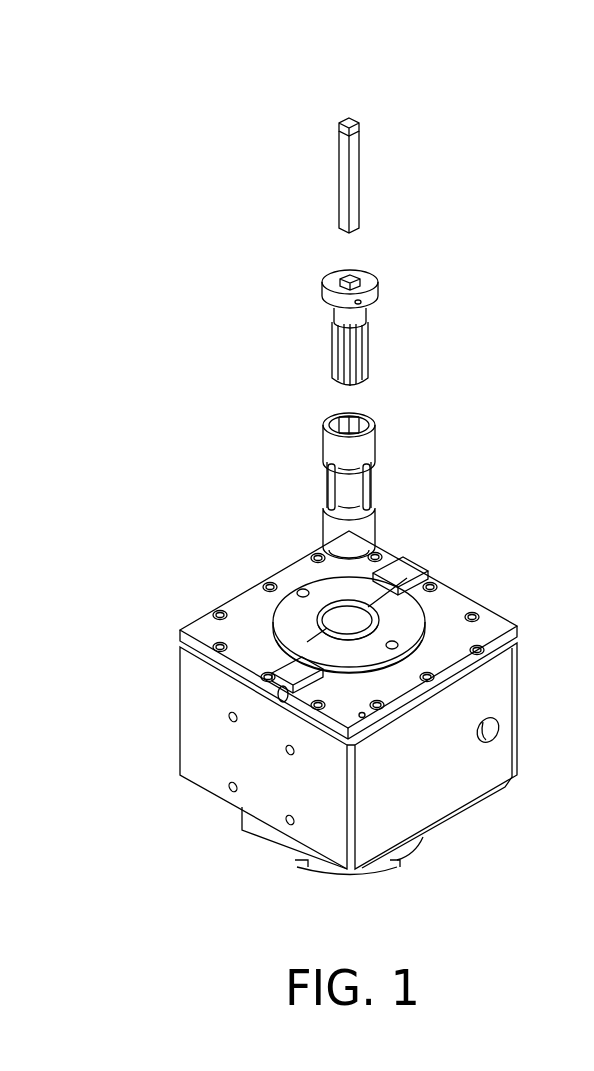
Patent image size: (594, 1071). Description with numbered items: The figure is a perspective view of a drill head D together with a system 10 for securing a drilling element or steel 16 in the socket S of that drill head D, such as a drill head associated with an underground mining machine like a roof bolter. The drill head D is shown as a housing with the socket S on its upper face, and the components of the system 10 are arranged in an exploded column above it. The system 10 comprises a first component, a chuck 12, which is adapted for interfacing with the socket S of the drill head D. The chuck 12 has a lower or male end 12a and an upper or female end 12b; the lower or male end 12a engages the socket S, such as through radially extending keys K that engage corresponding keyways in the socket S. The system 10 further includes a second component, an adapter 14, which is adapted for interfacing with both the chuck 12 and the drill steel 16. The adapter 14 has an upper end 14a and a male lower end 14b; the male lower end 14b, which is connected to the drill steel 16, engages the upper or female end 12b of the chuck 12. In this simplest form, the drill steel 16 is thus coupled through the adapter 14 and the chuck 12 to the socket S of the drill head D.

The system 10 is at (349, 482).
The chuck 12 is at (405, 457).
The lower or male end of the chuck 12a is at (357, 486).
The upper or female end of the chuck 12b is at (393, 410).
The adapter 14 is at (355, 323).
The upper end of the adapter 14a is at (388, 260).
The male lower end of the adapter 14b is at (312, 384).
The drilling element or steel 16 is at (355, 163).
The radially extending keys K is at (327, 485).
The socket S is at (287, 613).
The drill head D is at (500, 688).